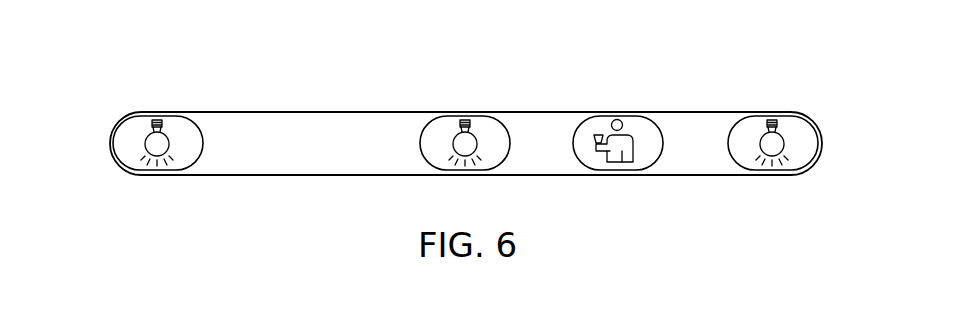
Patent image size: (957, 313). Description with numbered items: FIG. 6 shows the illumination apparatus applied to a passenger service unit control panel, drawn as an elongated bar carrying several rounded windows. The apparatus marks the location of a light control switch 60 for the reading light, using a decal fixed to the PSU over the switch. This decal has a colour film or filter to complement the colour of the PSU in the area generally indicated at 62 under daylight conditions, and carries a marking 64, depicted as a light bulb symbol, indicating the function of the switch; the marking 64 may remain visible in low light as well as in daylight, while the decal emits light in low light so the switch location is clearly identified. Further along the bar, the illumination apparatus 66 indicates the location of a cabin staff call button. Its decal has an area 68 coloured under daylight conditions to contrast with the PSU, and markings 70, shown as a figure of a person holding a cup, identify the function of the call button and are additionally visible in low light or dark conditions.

The light control switch 60 is at (127, 140).
The area 62 is at (175, 128).
The marking 64 is at (152, 130).
The illumination apparatus 66 is at (582, 120).
The area 68 is at (643, 135).
The markings 70 is at (617, 119).